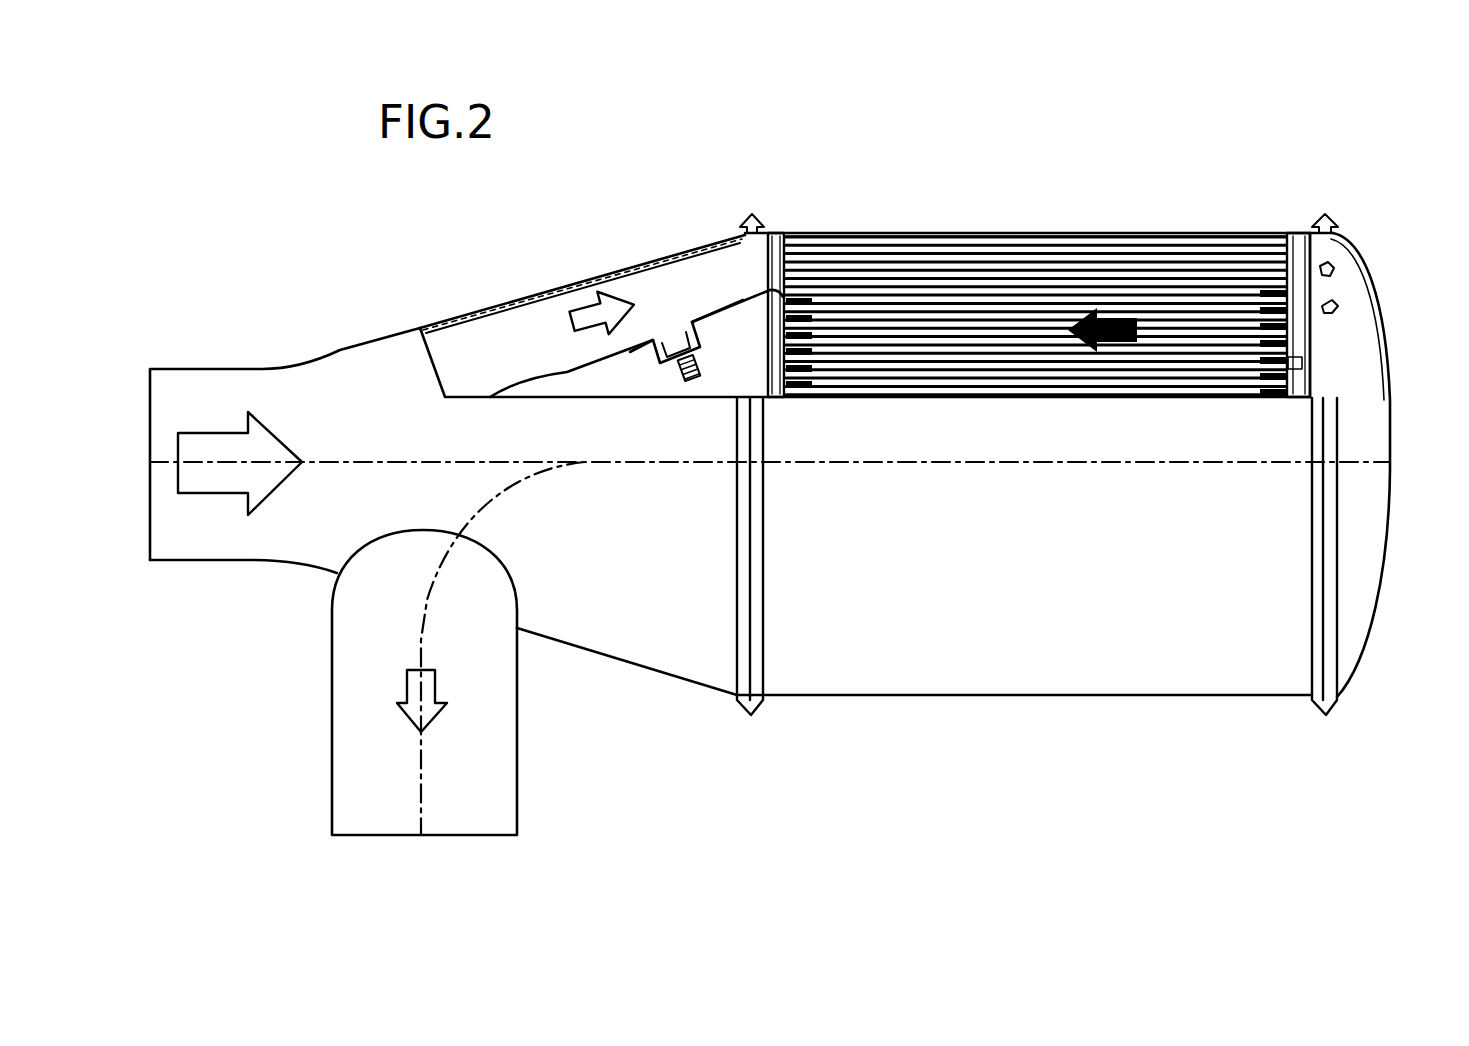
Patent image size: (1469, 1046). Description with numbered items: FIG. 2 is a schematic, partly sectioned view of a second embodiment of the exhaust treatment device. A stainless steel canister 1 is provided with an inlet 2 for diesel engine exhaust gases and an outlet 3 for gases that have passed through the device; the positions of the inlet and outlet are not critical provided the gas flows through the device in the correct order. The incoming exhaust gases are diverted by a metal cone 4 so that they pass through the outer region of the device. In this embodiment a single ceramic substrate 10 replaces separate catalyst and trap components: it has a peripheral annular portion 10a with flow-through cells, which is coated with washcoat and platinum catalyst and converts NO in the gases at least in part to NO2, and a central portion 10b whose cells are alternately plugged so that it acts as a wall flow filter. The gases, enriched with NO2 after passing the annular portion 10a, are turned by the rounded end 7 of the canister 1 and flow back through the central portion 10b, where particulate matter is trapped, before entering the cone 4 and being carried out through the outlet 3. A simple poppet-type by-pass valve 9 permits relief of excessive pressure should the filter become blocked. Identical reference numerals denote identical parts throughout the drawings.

The canister 1 is at (358, 342).
The inlet 2 is at (149, 413).
The outlet 3 is at (330, 677).
The metal cone 4 is at (545, 375).
The rounded end 7 is at (1378, 330).
The by-pass valve 9 is at (668, 365).
The ceramic substrate 10 is at (1205, 300).
The peripheral annular portion 10a is at (817, 250).
The central portion 10b is at (1032, 369).